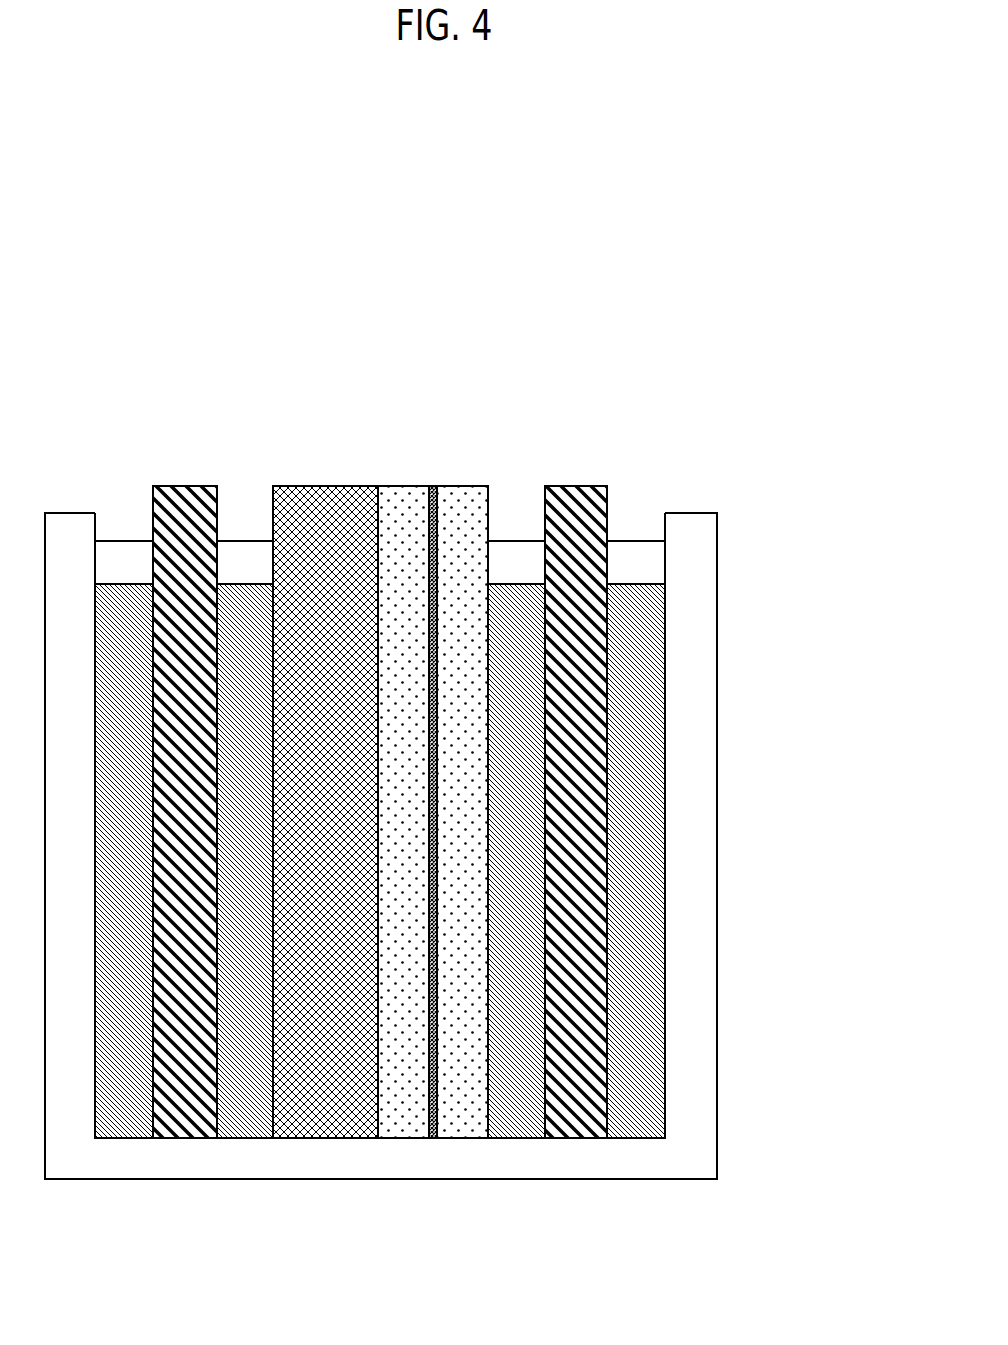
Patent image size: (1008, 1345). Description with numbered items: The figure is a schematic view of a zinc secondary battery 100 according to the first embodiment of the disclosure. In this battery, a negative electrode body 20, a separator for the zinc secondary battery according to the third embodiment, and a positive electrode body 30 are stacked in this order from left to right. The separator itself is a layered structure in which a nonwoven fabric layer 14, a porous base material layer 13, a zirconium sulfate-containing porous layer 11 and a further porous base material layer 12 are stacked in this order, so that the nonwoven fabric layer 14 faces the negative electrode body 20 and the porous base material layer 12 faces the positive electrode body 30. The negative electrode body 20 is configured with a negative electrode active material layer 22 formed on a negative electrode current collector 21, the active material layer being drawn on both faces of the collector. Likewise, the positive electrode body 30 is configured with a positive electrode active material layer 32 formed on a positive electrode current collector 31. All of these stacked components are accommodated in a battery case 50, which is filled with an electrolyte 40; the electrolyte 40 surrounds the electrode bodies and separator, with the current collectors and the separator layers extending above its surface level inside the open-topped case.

The zinc secondary battery 100 is at (745, 765).
The battery case 50 is at (690, 1065).
The electrolyte 40 is at (648, 570).
The negative electrode body 20 is at (78, 381).
The negative electrode current collector 21 is at (190, 490).
The negative electrode active material layer 22 is at (133, 622).
The zirconium sulfate-containing porous layer 11 is at (431, 496).
The porous base material layer 12 is at (460, 500).
The porous base material layer 13 is at (400, 500).
The nonwoven fabric layer 14 is at (348, 500).
The positive electrode body 30 is at (688, 386).
The positive electrode current collector 31 is at (580, 523).
The positive electrode active material layer 32 is at (635, 620).